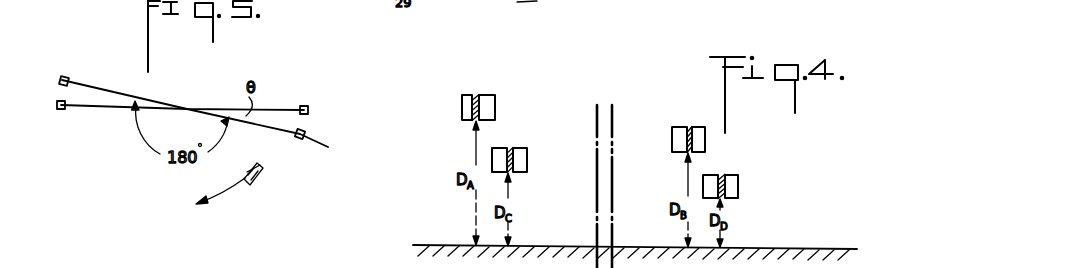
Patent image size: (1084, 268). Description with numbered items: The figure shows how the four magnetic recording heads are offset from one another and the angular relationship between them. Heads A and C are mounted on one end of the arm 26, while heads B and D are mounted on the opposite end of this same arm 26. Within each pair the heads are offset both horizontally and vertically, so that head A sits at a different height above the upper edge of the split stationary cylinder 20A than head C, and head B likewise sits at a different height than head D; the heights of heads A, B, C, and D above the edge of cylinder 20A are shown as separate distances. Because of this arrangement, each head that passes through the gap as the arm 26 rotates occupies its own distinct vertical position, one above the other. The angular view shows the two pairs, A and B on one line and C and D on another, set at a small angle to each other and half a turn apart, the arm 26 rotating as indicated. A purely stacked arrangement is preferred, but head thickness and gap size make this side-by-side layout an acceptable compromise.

In FIG. 5, the arm 26 is at (231, 104).
In FIG. 4, the split stationary cylinder 20A is at (802, 250).
In FIG. 5, the recording head A is at (58, 77).
In FIG. 4, the recording head A is at (460, 102).
In FIG. 5, the recording head B is at (320, 145).
In FIG. 4, the recording head B is at (670, 130).
In FIG. 5, the recording head C is at (55, 113).
In FIG. 4, the recording head C is at (526, 150).
In FIG. 5, the recording head D is at (308, 105).
In FIG. 4, the recording head D is at (737, 173).